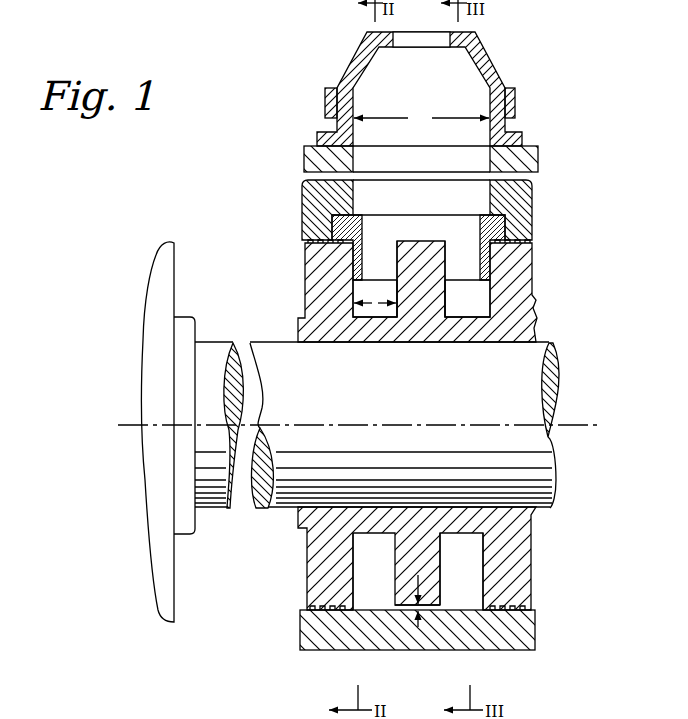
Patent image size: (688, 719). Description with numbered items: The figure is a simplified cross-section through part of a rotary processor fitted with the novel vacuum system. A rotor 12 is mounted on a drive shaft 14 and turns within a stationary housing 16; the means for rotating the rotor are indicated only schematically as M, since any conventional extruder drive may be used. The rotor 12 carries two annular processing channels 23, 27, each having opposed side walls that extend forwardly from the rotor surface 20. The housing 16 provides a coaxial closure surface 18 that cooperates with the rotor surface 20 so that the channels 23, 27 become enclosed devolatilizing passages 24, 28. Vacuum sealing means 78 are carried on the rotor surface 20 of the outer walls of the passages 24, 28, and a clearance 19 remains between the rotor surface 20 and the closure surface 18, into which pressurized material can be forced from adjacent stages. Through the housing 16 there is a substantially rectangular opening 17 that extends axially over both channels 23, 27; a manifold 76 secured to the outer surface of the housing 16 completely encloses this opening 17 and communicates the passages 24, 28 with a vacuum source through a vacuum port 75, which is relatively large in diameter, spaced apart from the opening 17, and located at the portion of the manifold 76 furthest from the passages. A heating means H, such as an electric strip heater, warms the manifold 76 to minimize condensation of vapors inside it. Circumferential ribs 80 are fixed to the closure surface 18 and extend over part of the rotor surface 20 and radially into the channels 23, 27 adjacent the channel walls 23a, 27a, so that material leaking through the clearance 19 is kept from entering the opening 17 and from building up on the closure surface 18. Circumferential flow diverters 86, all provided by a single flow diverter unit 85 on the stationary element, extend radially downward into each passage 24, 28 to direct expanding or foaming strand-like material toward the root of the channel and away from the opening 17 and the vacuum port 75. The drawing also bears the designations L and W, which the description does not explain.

The rotor 12 is at (523, 278).
The drive shaft 14 is at (530, 379).
The housing 16 is at (535, 188).
The opening 17 is at (303, 225).
The closure surface 18 is at (463, 587).
The clearance 19 is at (428, 602).
The rotor surface 20 is at (412, 600).
The annular processing channel 23 is at (398, 262).
The channel wall 23a is at (368, 310).
The devolatilizing passage 24 is at (368, 583).
The annular processing channel 27 is at (478, 275).
The channel wall 27a is at (477, 310).
The devolatilizing passage 28 is at (472, 590).
The vacuum port 75 is at (423, 38).
The manifold 76 is at (345, 72).
The vacuum sealing means 78 is at (310, 242).
The circumferential ribs 80 is at (337, 217).
The flow diverter unit 85 is at (376, 226).
The circumferential flow diverters 86 is at (390, 265).
The heating means H is at (515, 90).
The length dimension L is at (421, 118).
The means for rotating rotor M is at (168, 287).
The width dimension W is at (375, 305).